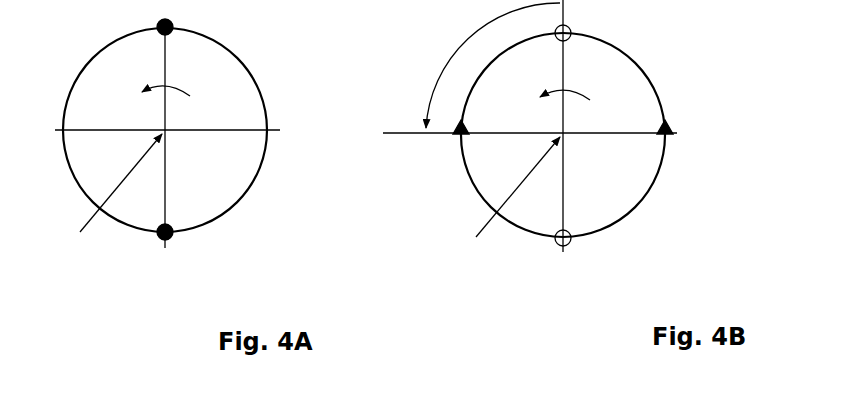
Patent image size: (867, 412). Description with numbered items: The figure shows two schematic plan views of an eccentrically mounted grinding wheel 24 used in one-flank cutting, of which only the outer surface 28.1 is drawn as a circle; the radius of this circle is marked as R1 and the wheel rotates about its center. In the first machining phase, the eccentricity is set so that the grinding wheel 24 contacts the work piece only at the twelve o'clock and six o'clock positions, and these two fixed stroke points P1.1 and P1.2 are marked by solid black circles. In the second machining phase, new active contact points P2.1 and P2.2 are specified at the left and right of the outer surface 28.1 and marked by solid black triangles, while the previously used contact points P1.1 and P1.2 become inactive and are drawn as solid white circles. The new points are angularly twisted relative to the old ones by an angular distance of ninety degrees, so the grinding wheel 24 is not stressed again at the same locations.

In FIG. 4A, the grinding wheel 24 is at (74, 28).
In FIG. 4B, the grinding wheel 24 is at (719, 41).
In FIG. 4A, the outer surface 28.1 is at (243, 200).
In FIG. 4B, the outer surface 28.1 is at (657, 190).
In FIG. 4A, the active contact point P1.1 is at (184, 18).
In FIG. 4B, the active contact point P1.1 is at (587, 25).
In FIG. 4A, the active contact point P1.2 is at (167, 247).
In FIG. 4B, the active contact point P1.2 is at (575, 255).
In FIG. 4B, the active contact point P2.1 is at (688, 134).
In FIG. 4B, the active contact point P2.2 is at (435, 139).
In FIG. 4A, the radius of circular path R1 is at (112, 197).
In FIG. 4B, the radius of circular path R1 is at (510, 200).